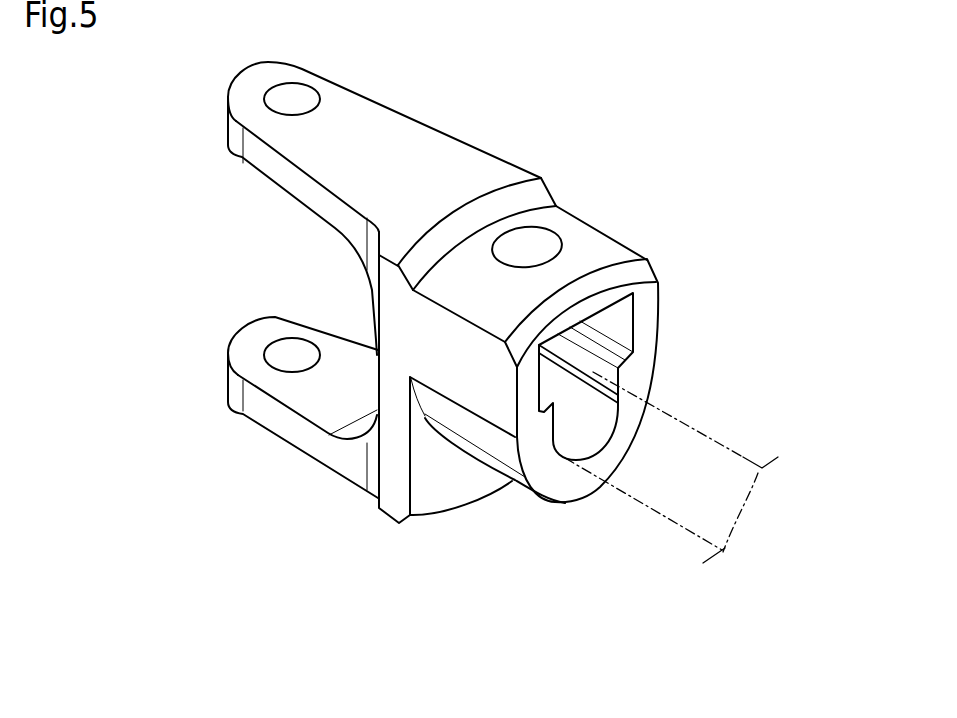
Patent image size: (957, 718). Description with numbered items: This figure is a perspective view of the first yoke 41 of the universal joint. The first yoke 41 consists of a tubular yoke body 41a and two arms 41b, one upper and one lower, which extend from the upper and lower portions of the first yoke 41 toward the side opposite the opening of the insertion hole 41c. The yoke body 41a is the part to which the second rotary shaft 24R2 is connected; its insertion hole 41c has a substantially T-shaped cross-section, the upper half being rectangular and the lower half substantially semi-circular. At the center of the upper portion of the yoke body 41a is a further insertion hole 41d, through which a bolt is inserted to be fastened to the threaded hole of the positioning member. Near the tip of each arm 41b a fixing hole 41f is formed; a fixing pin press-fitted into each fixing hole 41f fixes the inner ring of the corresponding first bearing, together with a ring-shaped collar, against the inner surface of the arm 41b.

The first yoke 41 is at (556, 350).
The yoke body 41a is at (658, 304).
The arms 41b is at (350, 259).
The insertion hole 41c is at (628, 328).
The insertion hole 41d is at (497, 254).
The fixing hole 41f is at (302, 87).
The second rotary shaft 24R2 is at (743, 460).